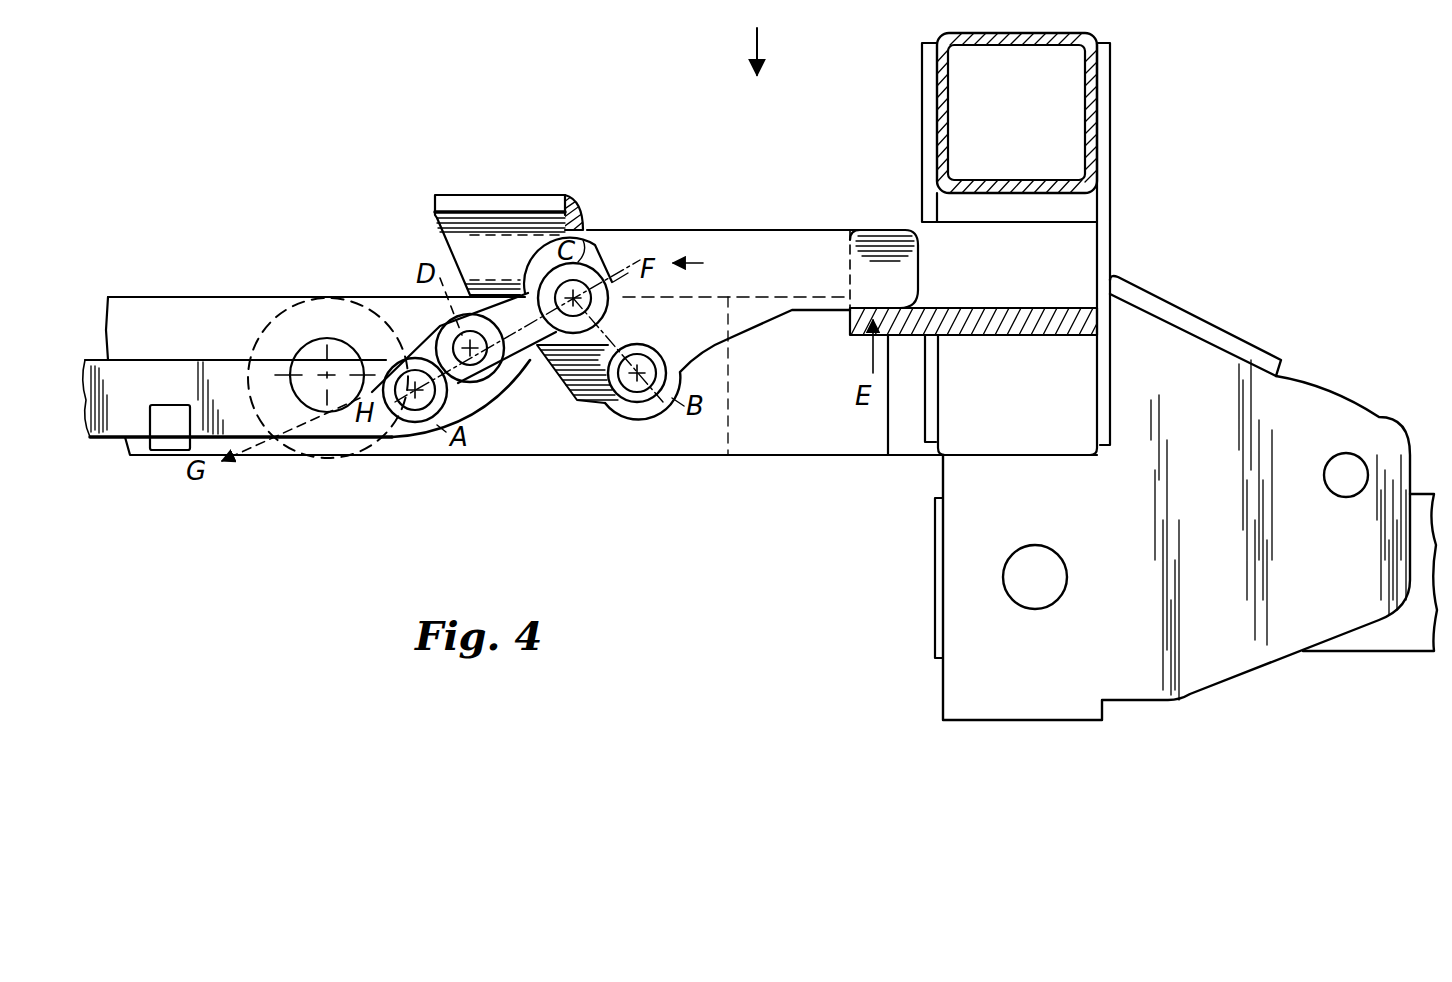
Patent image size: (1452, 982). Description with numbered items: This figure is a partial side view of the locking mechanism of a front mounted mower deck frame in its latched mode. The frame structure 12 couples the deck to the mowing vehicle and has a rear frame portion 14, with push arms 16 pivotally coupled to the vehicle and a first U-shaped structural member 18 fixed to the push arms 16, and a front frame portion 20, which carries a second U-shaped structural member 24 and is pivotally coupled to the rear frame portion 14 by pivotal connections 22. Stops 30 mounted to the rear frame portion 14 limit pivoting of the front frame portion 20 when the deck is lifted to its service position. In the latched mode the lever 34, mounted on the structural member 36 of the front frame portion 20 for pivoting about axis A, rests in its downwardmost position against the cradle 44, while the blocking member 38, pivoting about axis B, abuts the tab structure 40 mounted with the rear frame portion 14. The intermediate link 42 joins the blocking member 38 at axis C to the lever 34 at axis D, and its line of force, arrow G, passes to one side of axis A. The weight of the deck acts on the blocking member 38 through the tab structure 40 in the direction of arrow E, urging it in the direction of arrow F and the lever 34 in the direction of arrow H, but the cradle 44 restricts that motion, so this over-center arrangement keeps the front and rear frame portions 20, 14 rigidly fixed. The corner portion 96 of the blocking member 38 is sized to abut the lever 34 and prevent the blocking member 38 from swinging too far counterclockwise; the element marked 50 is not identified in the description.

The frame structure 12 is at (1140, 274).
The rear frame portion 14 is at (1322, 392).
The push arms 16 is at (1388, 648).
The first U-shaped structural member 18 is at (1098, 108).
The front frame portion 20 is at (230, 297).
The pivotal connections 22 is at (303, 463).
The second U-shaped structural member 24 is at (778, 457).
The stops 30 is at (493, 194).
The lever 34 is at (145, 376).
The structural member 36 is at (177, 312).
The blocking member 38 is at (778, 210).
The tab structure 40 is at (953, 307).
The intermediate link 42 is at (523, 350).
The cradle 44 is at (164, 452).
The pivot 50 is at (310, 345).
The corner portion 96 is at (550, 197).